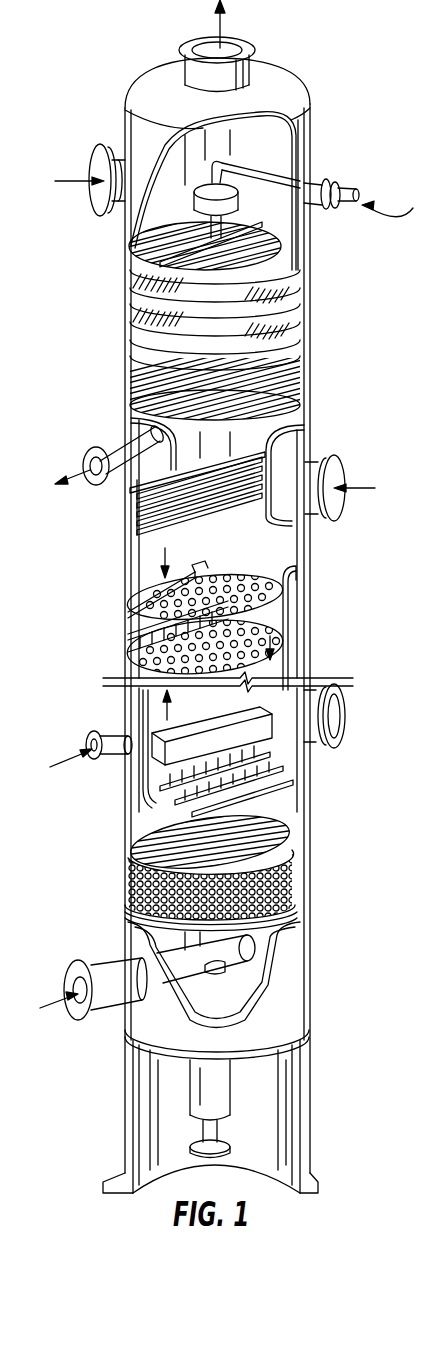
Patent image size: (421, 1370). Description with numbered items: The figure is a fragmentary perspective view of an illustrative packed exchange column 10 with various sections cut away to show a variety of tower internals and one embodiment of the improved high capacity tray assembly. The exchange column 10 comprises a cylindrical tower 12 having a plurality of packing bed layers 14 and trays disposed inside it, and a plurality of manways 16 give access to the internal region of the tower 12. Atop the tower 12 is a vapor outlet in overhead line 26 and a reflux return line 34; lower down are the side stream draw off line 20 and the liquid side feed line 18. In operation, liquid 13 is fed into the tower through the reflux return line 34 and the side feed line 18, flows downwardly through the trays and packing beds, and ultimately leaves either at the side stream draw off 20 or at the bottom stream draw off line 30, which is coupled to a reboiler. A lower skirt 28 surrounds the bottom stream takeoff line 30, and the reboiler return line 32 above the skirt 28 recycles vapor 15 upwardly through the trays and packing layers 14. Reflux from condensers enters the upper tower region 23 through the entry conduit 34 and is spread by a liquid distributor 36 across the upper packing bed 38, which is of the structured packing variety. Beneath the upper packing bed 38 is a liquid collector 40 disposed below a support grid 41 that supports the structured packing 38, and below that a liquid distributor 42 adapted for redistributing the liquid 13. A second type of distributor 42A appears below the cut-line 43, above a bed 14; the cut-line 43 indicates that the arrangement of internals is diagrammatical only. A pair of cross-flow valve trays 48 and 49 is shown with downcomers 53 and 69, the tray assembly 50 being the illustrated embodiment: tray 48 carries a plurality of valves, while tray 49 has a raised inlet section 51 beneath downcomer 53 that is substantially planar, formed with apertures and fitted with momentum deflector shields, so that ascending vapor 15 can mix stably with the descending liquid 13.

The exchange column 10 is at (348, 97).
The cylindrical tower 12 is at (300, 165).
The liquid 13 is at (92, 553).
The packing bed layers 14 is at (300, 292).
The gas flow 15 is at (225, 28).
The manways 16 is at (103, 155).
The liquid side feed line 18 is at (115, 758).
The side stream draw off line 20 is at (118, 440).
The upper tower region 23 is at (133, 320).
The overhead line 26 is at (252, 48).
The lower skirt 28 is at (282, 1130).
The bottom stream draw off line 30 is at (215, 1100).
The reboiler return line 32 is at (105, 1020).
The reflux return line 34 is at (338, 185).
The liquid distributor 36 is at (130, 252).
The upper packing bed 38 is at (133, 288).
The liquid collector 40 is at (300, 385).
The support grid 41 is at (300, 340).
The liquid distributor 42 is at (122, 512).
The second type of distributor 42A is at (290, 778).
The cut-line 43 is at (340, 677).
The cross-flow valve tray 48 is at (245, 575).
The cross-flow valve tray 49 is at (128, 660).
The tray wall 50 is at (298, 583).
The raised inlet section 51 is at (128, 644).
The downcomer 53 is at (128, 618).
The downcomer 69 is at (268, 652).